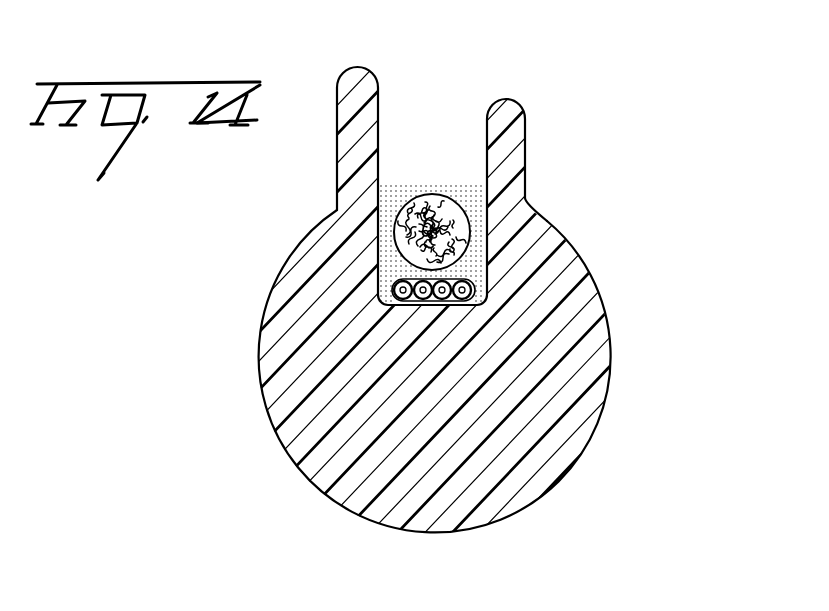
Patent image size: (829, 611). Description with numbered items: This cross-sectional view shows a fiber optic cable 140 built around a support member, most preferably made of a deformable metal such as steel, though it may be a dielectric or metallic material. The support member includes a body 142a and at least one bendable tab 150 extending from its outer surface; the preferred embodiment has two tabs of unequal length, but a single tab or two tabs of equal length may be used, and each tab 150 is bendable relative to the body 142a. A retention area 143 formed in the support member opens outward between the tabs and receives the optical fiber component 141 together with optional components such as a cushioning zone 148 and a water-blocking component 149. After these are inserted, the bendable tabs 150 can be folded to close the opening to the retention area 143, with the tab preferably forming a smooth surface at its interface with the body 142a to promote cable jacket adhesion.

The fiber optic cable 140 is at (635, 155).
The optical fiber component 141 is at (700, 316).
The body 142a is at (293, 367).
The retention area 143 is at (397, 200).
The cushioning zone 148 is at (683, 245).
The water-blocking component 149 is at (634, 205).
The bendable tab 150 is at (509, 101).